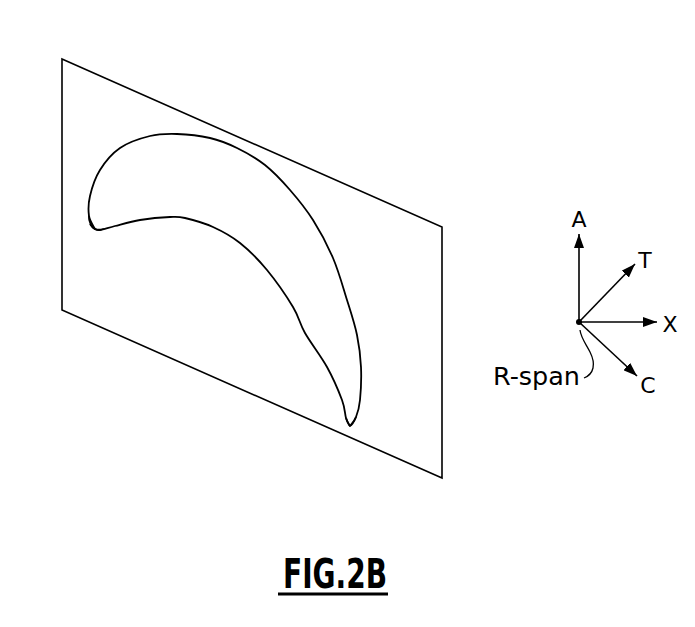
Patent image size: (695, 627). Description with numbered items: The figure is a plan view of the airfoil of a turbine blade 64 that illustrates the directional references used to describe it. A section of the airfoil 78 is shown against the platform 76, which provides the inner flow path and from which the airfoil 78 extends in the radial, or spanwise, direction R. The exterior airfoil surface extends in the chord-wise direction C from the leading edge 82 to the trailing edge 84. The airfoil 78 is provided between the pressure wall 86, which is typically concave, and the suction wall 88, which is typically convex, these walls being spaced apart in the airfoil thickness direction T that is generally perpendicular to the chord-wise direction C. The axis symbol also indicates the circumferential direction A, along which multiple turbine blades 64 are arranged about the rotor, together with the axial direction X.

The turbine blade 64 is at (229, 281).
The platform 76 is at (143, 90).
The airfoil 78 is at (101, 232).
The leading edge 82 is at (94, 229).
The trailing edge 84 is at (350, 427).
The pressure wall 86 is at (240, 244).
The suction wall 88 is at (237, 148).